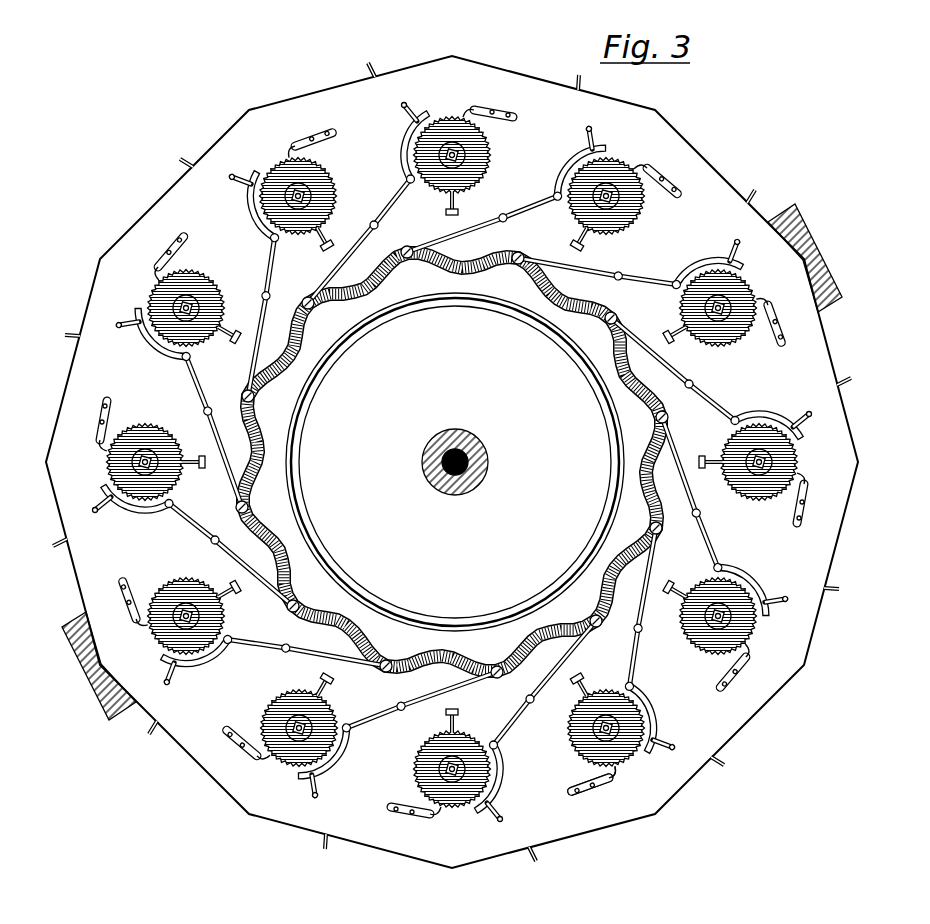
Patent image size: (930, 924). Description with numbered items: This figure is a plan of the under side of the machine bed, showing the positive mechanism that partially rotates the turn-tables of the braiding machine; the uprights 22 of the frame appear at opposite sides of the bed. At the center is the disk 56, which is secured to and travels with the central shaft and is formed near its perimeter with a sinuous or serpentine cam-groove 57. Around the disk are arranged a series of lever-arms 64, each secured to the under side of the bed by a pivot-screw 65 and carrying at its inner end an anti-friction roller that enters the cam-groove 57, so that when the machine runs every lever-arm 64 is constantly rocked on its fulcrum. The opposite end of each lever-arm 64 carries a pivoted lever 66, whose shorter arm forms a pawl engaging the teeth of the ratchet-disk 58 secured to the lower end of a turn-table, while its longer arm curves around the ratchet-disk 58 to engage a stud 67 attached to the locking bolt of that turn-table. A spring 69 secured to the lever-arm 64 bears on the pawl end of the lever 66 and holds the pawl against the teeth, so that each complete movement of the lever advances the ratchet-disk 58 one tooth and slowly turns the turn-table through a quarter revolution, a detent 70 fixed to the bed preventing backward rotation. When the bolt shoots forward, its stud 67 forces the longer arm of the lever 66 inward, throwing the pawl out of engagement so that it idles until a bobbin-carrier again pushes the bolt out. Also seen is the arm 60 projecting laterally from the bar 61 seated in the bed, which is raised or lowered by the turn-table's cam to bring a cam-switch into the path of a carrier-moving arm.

The uprights 22 is at (803, 238).
The disk 56 is at (455, 462).
The serpentine cam-groove 57 is at (257, 418).
The ratchet-disk 58 is at (738, 500).
The arm 60 is at (704, 458).
The bar 61 is at (702, 463).
The lever-arm 64 is at (712, 520).
The pivot-screw 65 is at (662, 528).
The lever 66 is at (745, 587).
The stud 67 is at (786, 599).
The spring 69 is at (712, 568).
The detent 70 is at (744, 660).